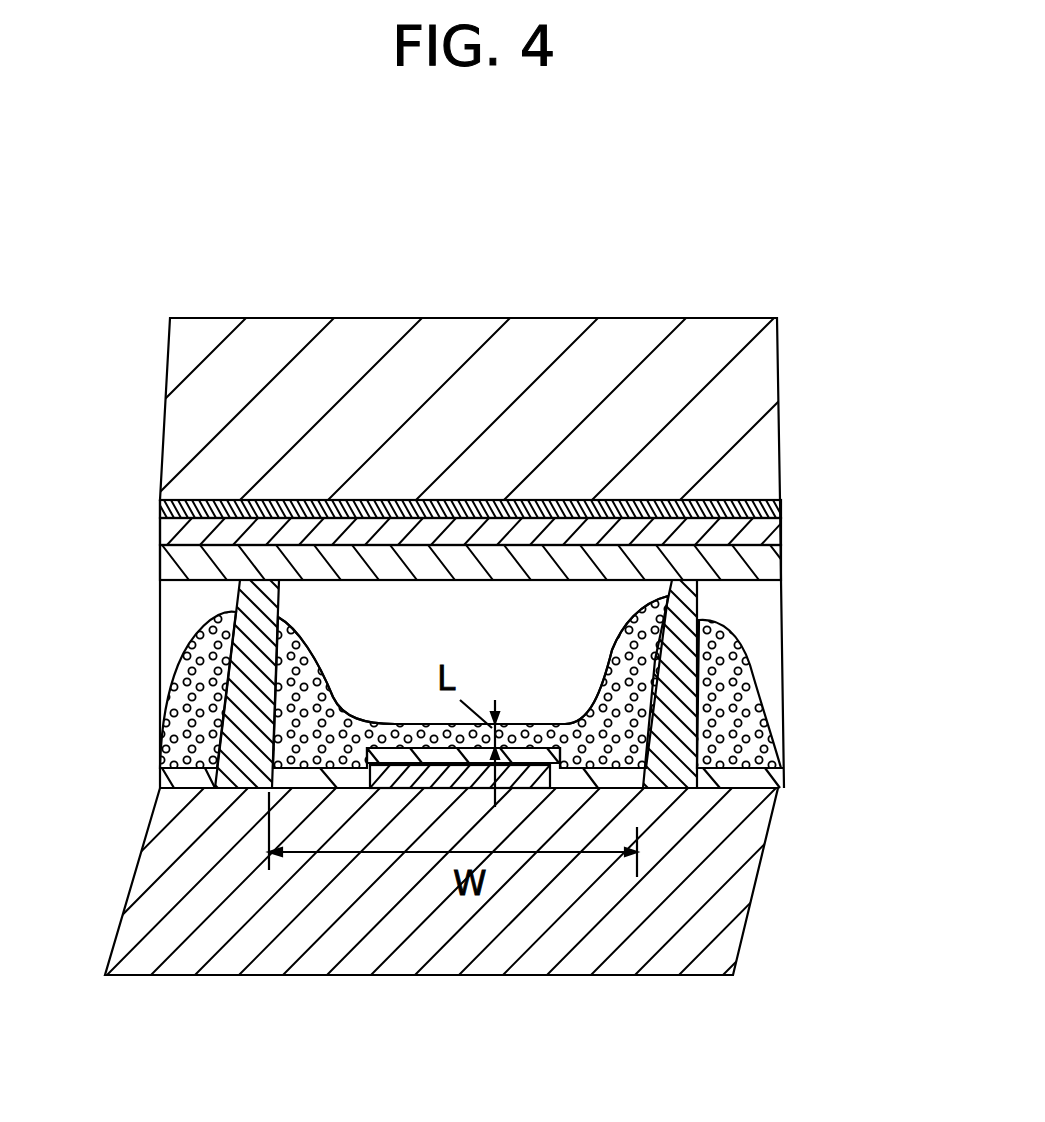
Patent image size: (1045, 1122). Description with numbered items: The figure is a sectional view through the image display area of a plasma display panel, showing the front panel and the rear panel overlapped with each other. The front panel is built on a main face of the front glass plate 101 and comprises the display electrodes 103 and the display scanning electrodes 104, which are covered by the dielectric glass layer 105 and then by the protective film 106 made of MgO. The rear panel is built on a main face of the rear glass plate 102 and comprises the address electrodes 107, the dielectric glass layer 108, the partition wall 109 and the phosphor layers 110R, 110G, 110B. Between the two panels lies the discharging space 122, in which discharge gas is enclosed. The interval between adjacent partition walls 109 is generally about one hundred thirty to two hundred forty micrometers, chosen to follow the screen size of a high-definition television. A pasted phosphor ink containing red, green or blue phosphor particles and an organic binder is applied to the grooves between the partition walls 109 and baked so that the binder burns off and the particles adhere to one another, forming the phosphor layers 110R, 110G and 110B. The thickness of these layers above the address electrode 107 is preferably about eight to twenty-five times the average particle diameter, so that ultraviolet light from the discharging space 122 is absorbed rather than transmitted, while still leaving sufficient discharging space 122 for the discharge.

The front glass plate 101 is at (765, 400).
The rear glass plate 102 is at (740, 878).
The display electrodes 103 is at (549, 497).
The display scanning electrodes 104 is at (778, 507).
The dielectric glass layer 105 is at (779, 540).
The protective film 106 is at (778, 567).
The address electrodes 107 is at (340, 790).
The dielectric glass layer 108 is at (290, 715).
The partition wall 109 is at (672, 585).
The red phosphor layer 110R is at (167, 697).
The green phosphor layer 110G is at (603, 762).
The blue phosphor layer 110B is at (763, 733).
The discharging space 122 is at (587, 647).